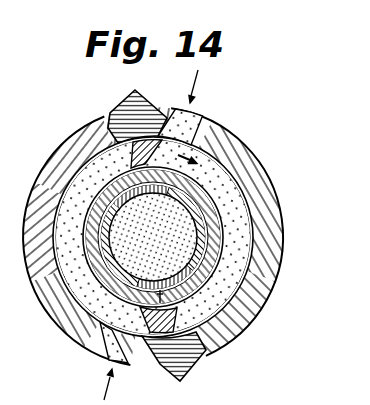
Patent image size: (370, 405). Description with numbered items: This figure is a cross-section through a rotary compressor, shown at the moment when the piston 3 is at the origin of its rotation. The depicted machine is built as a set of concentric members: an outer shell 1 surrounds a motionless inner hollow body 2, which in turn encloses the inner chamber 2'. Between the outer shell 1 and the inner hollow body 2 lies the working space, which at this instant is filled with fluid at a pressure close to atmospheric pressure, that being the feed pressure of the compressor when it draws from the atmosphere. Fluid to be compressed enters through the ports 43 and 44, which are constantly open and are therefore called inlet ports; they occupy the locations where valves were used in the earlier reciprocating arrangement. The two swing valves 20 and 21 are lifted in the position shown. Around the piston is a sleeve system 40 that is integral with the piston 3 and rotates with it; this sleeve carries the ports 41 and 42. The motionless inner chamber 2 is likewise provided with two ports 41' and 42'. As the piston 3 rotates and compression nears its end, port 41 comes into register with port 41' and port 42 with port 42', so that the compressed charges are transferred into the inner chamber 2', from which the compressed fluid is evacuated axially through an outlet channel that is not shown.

The outer shell 1 is at (268, 212).
The inner hollow body 2 is at (195, 237).
The inner chamber 2' is at (102, 221).
The piston 3 is at (168, 319).
The swing valve 20 is at (125, 113).
The swing valve 21 is at (186, 362).
The sleeve system 40 is at (206, 204).
The port 41 is at (196, 197).
The port 41' is at (112, 285).
The port 42 is at (93, 303).
The port 42' is at (98, 140).
The inlet port 43 is at (188, 118).
The inlet port 44 is at (115, 353).